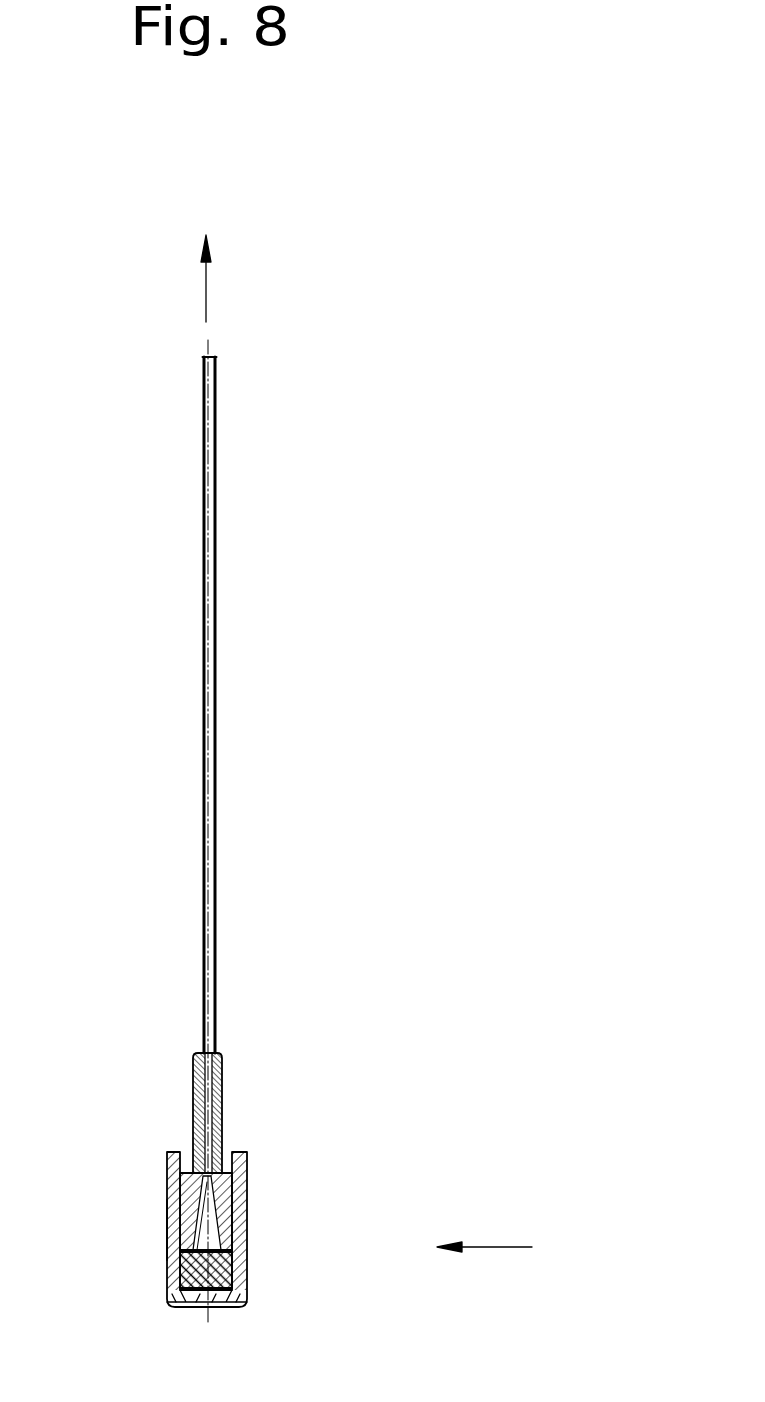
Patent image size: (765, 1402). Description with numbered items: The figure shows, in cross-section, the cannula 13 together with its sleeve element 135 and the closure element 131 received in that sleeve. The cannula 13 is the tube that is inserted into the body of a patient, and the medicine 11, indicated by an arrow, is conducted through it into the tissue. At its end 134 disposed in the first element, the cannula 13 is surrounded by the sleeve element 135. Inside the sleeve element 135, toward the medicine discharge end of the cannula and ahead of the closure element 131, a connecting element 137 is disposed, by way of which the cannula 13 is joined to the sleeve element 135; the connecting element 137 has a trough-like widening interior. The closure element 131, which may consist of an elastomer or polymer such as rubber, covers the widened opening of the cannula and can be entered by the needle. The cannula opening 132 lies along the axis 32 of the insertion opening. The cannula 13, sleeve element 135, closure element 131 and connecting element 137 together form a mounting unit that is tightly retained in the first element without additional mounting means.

The medicine 11 is at (206, 295).
The cannula 13 is at (214, 690).
The axis of the insertion opening 32 is at (173, 1232).
The closure element 131 is at (233, 1274).
The cannula opening 132 is at (167, 1203).
The end of the cannula 134 is at (525, 1249).
The sleeve element 135 is at (245, 1230).
The connecting element 137 is at (245, 1198).